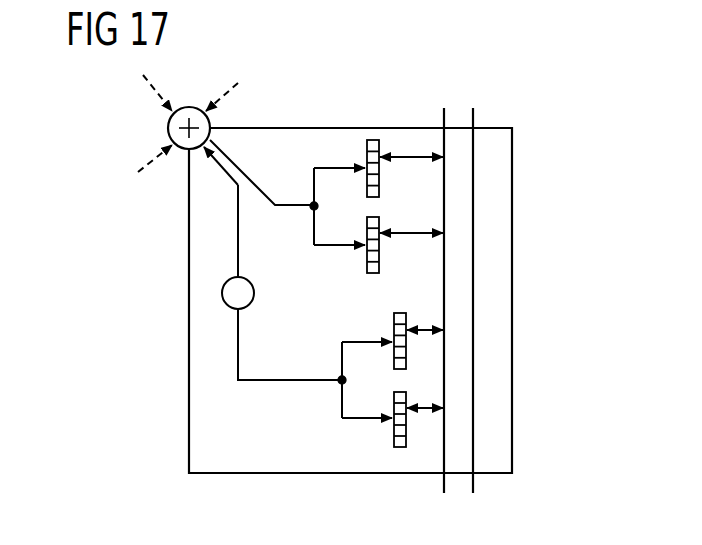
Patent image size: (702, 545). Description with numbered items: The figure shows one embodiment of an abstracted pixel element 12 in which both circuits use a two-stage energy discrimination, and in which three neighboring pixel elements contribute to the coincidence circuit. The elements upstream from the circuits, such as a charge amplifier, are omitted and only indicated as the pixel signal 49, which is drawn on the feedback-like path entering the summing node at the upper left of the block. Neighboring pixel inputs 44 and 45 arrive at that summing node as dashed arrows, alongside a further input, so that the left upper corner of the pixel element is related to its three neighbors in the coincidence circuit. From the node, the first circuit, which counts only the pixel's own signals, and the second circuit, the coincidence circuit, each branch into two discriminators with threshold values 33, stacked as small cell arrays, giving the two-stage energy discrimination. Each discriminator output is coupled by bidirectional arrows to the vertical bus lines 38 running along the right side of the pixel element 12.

The control device 12 is at (410, 128).
The storage element 33 is at (406, 349).
The data bus 38 is at (473, 185).
The input signal 44 is at (178, 153).
The input signal 45 is at (230, 94).
The pixel signal 49 is at (223, 292).